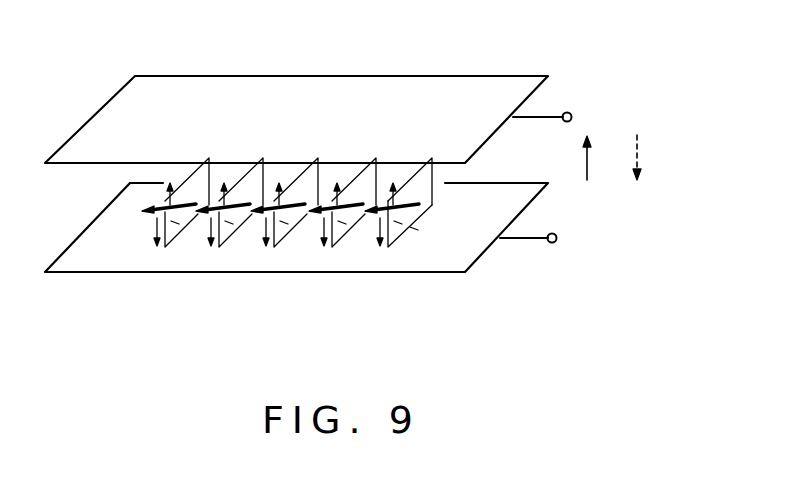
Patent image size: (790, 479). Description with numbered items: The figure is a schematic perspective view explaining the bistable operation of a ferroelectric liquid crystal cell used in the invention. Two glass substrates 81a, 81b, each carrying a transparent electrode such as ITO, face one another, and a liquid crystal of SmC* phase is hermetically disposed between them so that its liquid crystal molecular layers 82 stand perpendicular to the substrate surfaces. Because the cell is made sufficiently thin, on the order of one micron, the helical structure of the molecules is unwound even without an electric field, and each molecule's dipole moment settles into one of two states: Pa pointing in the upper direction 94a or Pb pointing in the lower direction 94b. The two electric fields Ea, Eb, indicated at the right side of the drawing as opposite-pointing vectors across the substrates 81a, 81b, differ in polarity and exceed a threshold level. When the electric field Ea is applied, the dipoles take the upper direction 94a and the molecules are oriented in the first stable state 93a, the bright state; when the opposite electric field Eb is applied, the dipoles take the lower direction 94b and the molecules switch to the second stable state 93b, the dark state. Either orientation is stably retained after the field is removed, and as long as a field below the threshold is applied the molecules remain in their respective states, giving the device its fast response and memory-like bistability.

The substrate 81a is at (492, 90).
The substrate 81b is at (470, 252).
The liquid crystal molecular layers 82 is at (423, 180).
The first stable state 93a is at (188, 182).
The second stable state 93b is at (172, 228).
The upper direction 94a is at (172, 195).
The lower direction 94b is at (160, 219).
The electric field Ea is at (607, 158).
The electric field Eb is at (656, 157).